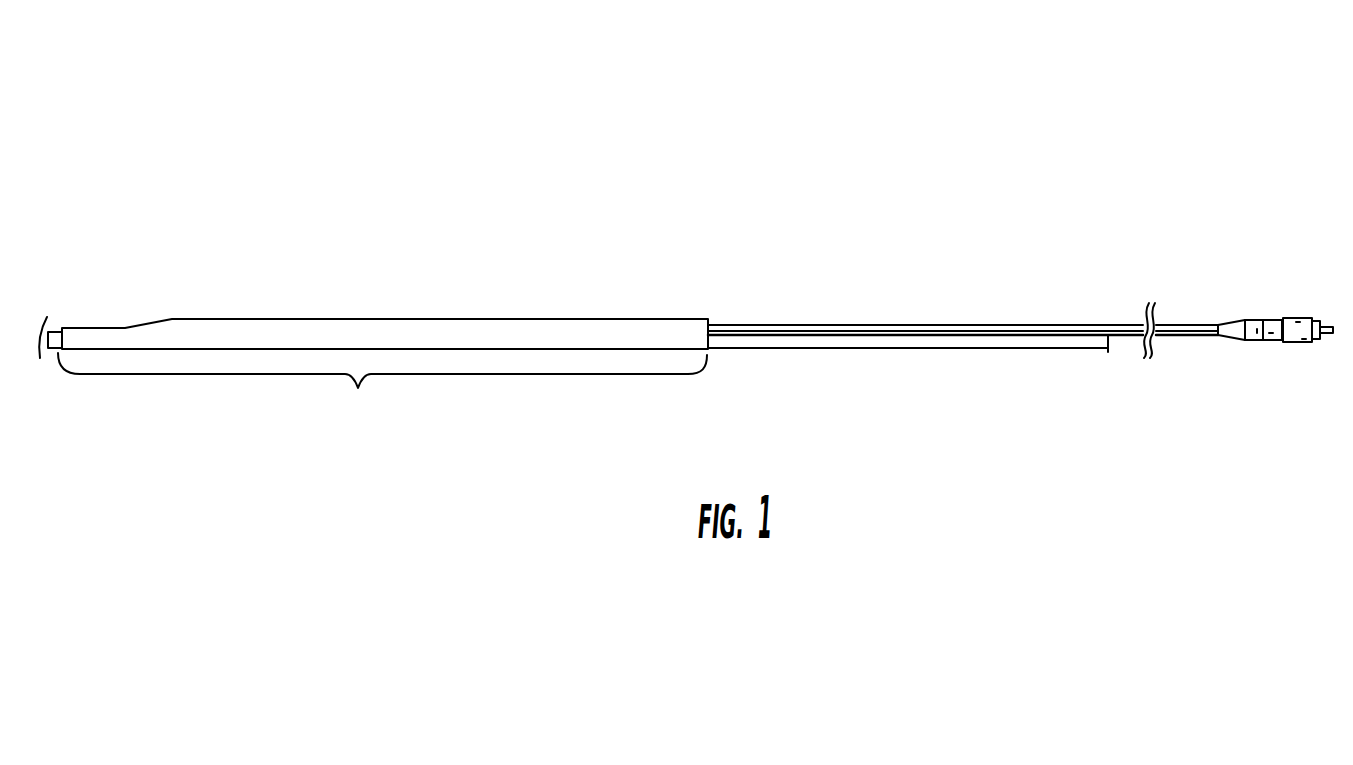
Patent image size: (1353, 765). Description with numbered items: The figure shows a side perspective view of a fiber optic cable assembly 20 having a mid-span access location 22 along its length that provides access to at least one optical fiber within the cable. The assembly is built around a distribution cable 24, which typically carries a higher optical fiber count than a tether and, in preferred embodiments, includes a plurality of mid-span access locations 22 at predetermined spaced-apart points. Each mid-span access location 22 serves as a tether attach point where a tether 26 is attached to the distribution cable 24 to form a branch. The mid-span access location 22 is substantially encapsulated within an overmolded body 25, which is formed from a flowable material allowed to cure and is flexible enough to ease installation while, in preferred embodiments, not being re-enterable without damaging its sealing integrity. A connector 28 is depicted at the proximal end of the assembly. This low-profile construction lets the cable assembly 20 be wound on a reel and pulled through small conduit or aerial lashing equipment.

The fiber optic cable assembly 20 is at (645, 102).
The mid-span access location 22 is at (382, 395).
The distribution cable 24 is at (54, 332).
The overmolded body 25 is at (407, 332).
The tether 26 is at (823, 322).
The connector hub 28 is at (1293, 320).